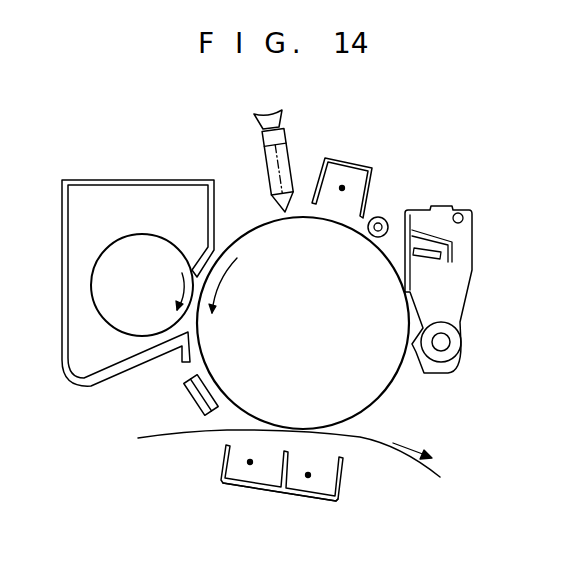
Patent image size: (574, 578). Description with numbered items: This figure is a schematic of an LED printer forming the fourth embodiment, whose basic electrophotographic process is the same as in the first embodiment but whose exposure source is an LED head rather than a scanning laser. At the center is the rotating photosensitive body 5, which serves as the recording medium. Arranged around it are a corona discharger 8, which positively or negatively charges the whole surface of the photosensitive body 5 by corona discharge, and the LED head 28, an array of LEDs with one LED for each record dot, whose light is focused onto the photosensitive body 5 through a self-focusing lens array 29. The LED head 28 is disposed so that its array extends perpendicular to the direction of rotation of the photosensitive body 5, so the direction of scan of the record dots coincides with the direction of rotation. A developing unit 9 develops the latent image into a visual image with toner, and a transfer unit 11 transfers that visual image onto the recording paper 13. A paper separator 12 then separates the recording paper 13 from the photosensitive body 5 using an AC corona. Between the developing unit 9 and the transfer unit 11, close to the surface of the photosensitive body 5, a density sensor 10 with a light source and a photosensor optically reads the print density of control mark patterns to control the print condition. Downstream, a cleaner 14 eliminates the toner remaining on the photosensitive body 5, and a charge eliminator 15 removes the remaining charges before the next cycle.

The photosensitive body 5 is at (388, 390).
The corona discharger 8 is at (363, 163).
The developing unit 9 is at (117, 243).
The density sensor 10 is at (190, 399).
The transfer unit 11 is at (222, 465).
The paper separator 12 is at (310, 501).
The recording paper 13 is at (411, 467).
The cleaner 14 is at (470, 300).
The charge eliminator 15 is at (384, 216).
The LED head 28 is at (281, 106).
The self-focusing lens array 29 is at (267, 165).